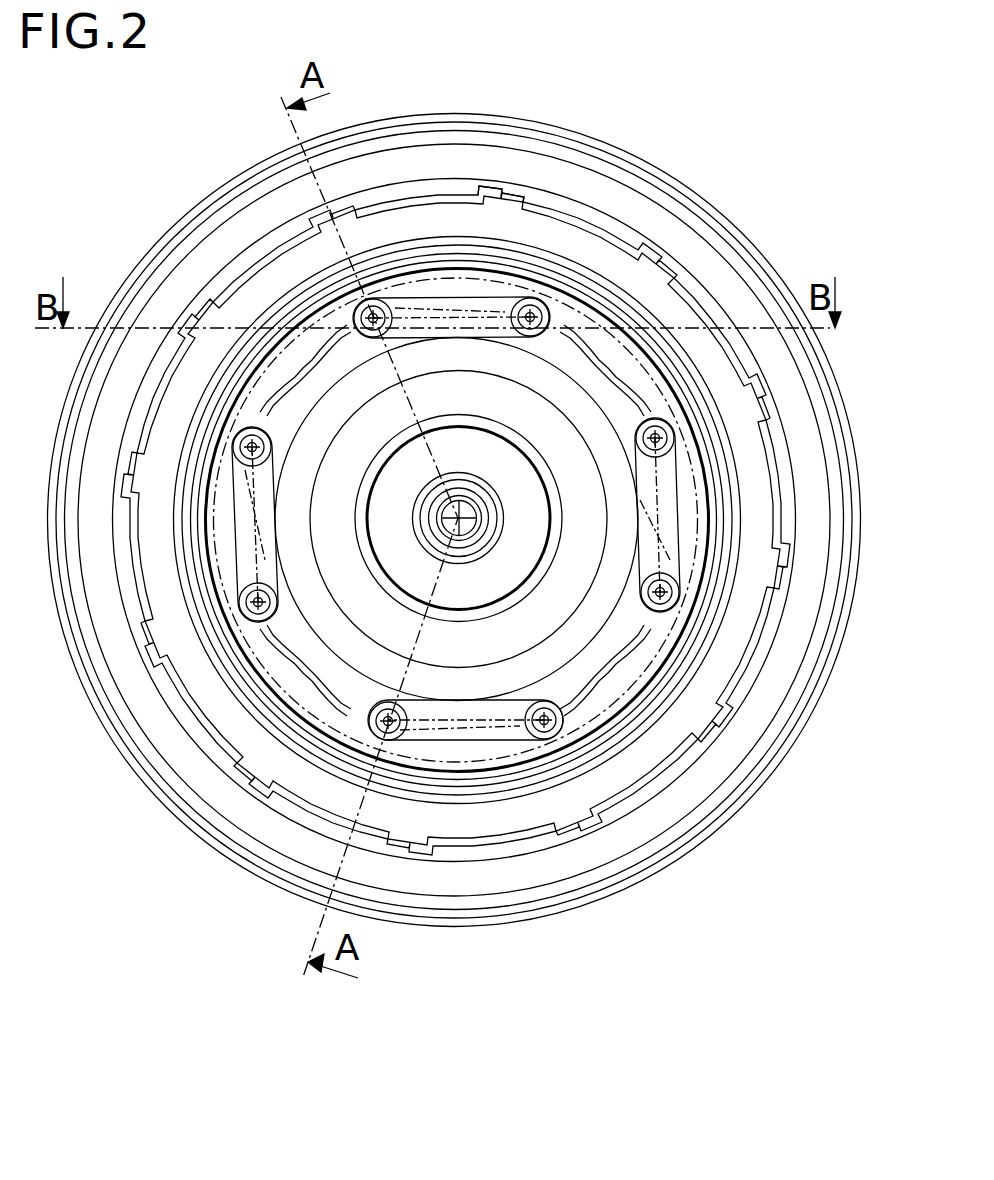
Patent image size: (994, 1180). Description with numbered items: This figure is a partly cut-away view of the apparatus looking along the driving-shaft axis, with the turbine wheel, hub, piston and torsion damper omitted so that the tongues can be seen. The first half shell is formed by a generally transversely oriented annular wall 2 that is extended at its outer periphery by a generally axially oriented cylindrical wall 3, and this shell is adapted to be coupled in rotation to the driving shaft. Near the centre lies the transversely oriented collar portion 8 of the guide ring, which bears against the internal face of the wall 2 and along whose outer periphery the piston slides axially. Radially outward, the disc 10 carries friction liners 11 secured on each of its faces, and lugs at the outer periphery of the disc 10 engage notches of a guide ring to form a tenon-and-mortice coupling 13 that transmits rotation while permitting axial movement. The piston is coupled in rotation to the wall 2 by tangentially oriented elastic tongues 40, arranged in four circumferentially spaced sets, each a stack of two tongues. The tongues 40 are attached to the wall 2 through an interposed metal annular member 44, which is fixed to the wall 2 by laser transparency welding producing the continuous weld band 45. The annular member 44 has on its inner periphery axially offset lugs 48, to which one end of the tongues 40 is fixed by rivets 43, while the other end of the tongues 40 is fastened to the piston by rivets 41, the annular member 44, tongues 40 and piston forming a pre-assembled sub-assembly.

The annular wall 2 is at (676, 240).
The cylindrical wall 3 is at (158, 240).
The collar portion 8 is at (400, 548).
The disc 10 is at (577, 245).
The friction liners 11 is at (600, 252).
The coupling 13 is at (510, 188).
The elastic tongues 40 is at (257, 498).
The rivets 41 is at (413, 742).
The rivets 43 is at (548, 742).
The annular member 44 is at (446, 556).
The laser transparency weld 45 is at (425, 268).
The lugs 48 is at (582, 672).